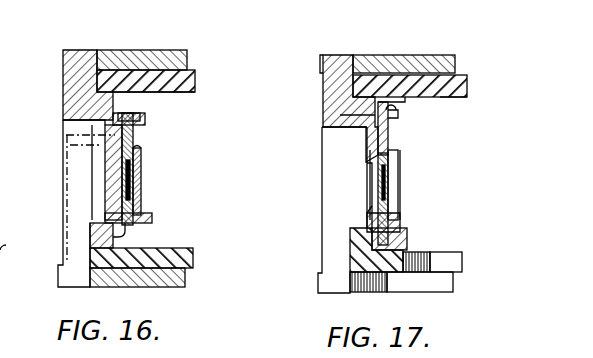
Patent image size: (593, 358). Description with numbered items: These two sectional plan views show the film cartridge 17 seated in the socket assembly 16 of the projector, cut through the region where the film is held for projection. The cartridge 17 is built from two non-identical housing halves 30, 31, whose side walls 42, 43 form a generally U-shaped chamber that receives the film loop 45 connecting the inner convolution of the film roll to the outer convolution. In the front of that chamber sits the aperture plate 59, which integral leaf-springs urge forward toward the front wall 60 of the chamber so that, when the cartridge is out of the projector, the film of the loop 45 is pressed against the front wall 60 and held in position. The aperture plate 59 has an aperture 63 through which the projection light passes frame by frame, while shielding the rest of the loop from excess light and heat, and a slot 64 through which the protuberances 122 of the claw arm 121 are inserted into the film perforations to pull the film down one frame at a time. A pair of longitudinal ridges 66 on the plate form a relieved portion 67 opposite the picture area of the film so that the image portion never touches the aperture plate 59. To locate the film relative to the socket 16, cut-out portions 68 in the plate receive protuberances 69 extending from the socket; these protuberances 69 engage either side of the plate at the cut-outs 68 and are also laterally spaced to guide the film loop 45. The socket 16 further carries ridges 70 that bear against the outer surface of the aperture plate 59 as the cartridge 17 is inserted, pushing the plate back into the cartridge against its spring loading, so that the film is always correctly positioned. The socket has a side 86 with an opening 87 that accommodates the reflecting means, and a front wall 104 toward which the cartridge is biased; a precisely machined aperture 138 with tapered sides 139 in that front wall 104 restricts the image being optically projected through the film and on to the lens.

In FIG. 16, the socket assembly 16 is at (138, 50).
In FIG. 17, the socket assembly 16 is at (412, 56).
In FIG. 16, the film cartridge 17 is at (196, 78).
In FIG. 17, the film cartridge 17 is at (471, 81).
In FIG. 17, the housing half 30 is at (462, 262).
In FIG. 16, the housing half 31 is at (196, 89).
In FIG. 17, the housing half 31 is at (469, 97).
In FIG. 16, the side wall 42 is at (193, 250).
In FIG. 16, the side wall 43 is at (184, 93).
In FIG. 16, the film loop 45 is at (113, 197).
In FIG. 17, the film loop 45 is at (380, 172).
In FIG. 16, the aperture plate 59 is at (134, 198).
In FIG. 17, the aperture plate 59 is at (404, 232).
In FIG. 16, the front wall 60 is at (118, 237).
In FIG. 17, the front wall 60 is at (394, 100).
In FIG. 17, the aperture 63 is at (398, 163).
In FIG. 16, the slot 64 is at (141, 147).
In FIG. 16, the ridges 66 is at (141, 163).
In FIG. 17, the ridges 66 is at (398, 114).
In FIG. 16, the relieved portion 67 is at (131, 185).
In FIG. 17, the relieved portion 67 is at (392, 180).
In FIG. 16, the cut-out portions 68 is at (146, 119).
In FIG. 16, the protuberances 69 is at (131, 113).
In FIG. 17, the ridges 70 is at (390, 125).
In FIG. 16, the side 86 is at (185, 278).
In FIG. 17, the side 86 is at (452, 288).
In FIG. 17, the opening 87 is at (352, 270).
In FIG. 16, the front wall 104 is at (67, 84).
In FIG. 17, the front wall 104 is at (370, 140).
In FIG. 16, the claw arm 121 is at (60, 195).
In FIG. 16, the protuberances 122 is at (88, 147).
In FIG. 17, the aperture 138 is at (368, 185).
In FIG. 17, the tapered sides 139 is at (366, 212).